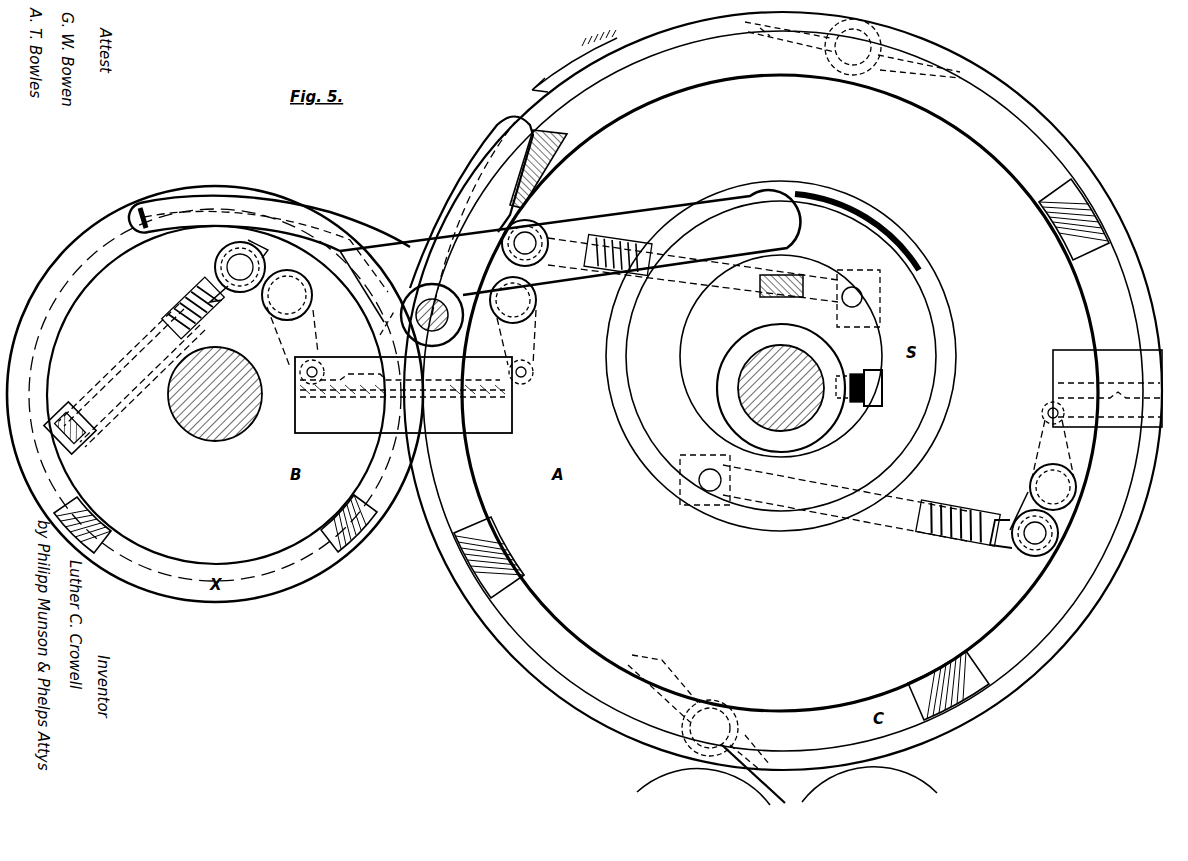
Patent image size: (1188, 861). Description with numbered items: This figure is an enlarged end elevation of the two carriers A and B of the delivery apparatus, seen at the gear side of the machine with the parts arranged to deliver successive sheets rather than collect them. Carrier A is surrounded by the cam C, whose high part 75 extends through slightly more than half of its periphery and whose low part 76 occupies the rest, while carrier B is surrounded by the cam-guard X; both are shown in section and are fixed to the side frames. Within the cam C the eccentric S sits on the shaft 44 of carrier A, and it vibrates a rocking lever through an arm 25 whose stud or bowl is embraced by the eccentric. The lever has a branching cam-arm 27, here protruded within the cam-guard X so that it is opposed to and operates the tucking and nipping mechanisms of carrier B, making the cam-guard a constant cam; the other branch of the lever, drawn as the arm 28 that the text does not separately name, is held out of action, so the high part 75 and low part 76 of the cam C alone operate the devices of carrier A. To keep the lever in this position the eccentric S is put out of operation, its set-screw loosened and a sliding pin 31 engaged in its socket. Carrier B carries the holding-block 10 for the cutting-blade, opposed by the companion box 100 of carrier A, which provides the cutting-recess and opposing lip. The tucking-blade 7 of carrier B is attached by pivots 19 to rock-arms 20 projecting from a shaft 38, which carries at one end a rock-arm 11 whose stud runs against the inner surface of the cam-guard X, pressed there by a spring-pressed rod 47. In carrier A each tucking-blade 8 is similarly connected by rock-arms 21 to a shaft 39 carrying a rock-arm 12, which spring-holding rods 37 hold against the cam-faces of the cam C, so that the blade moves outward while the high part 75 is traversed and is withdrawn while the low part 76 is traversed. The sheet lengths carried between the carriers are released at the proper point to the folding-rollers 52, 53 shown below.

The tucking-blade 7 is at (387, 330).
The tucking-blade 8 is at (428, 380).
The holding-block 10 is at (403, 395).
The companion box 100 is at (459, 395).
The rock-arm 11 is at (218, 258).
The rock-arm 12 is at (535, 226).
The pivot 19 is at (300, 373).
The rock-arm 20 is at (292, 337).
The rock-arm 21 is at (534, 336).
The arm 25 is at (648, 356).
The cam-arm 27 is at (269, 241).
The brake arm 28 is at (471, 216).
The sliding pin 31 is at (760, 284).
The spring-holding rod 37 is at (615, 240).
The shaft 38 is at (287, 295).
The shaft 39 is at (783, 393).
The shaft 44 is at (760, 362).
The spring-pressed rod 47 is at (180, 307).
The folding-roller 52 is at (869, 784).
The folding-roller 53 is at (703, 787).
The high part 75 is at (913, 100).
The low part 76 is at (765, 712).